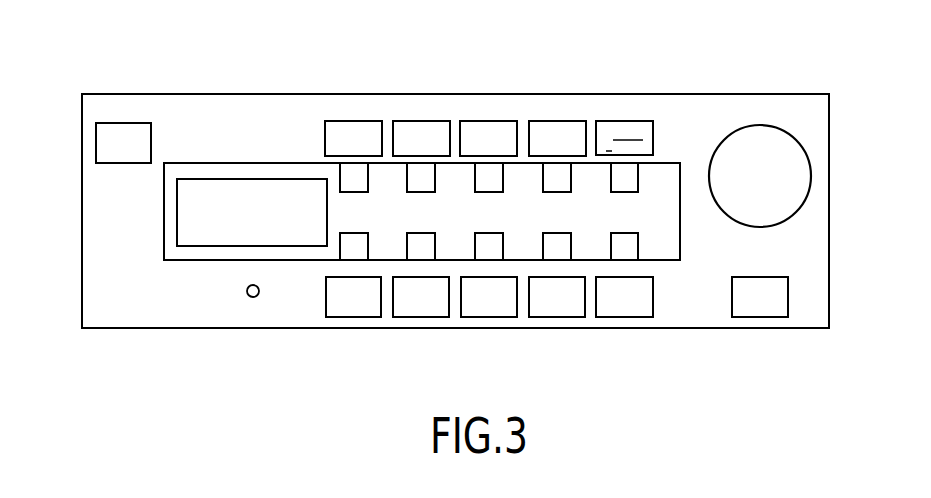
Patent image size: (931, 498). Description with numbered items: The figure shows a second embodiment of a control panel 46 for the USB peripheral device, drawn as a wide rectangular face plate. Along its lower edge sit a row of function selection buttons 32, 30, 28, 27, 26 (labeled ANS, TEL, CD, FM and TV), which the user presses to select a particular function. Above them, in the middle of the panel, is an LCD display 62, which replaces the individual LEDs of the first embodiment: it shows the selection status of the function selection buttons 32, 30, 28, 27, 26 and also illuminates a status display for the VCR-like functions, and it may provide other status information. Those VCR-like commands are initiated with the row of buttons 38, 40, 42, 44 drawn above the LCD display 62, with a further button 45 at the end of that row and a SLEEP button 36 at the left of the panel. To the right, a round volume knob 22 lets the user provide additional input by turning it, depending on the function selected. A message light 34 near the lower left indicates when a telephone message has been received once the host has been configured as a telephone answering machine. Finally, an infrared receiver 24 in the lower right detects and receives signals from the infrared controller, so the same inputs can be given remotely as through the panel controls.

The control panel 46 is at (687, 96).
The sleep button 36 is at (96, 143).
The LCD display 62 is at (280, 179).
The button 38 is at (334, 121).
The button 40 is at (398, 121).
The button 42 is at (478, 121).
The button 44 is at (548, 121).
The exit/quit button 45 is at (622, 121).
The volume knob 22 is at (782, 126).
The message light 34 is at (247, 291).
The function selection button 32 is at (338, 318).
The function selection button 30 is at (413, 318).
The function selection button 28 is at (490, 318).
The function selection button 27 is at (550, 318).
The function selection button 26 is at (617, 318).
The infrared receiver 24 is at (775, 318).